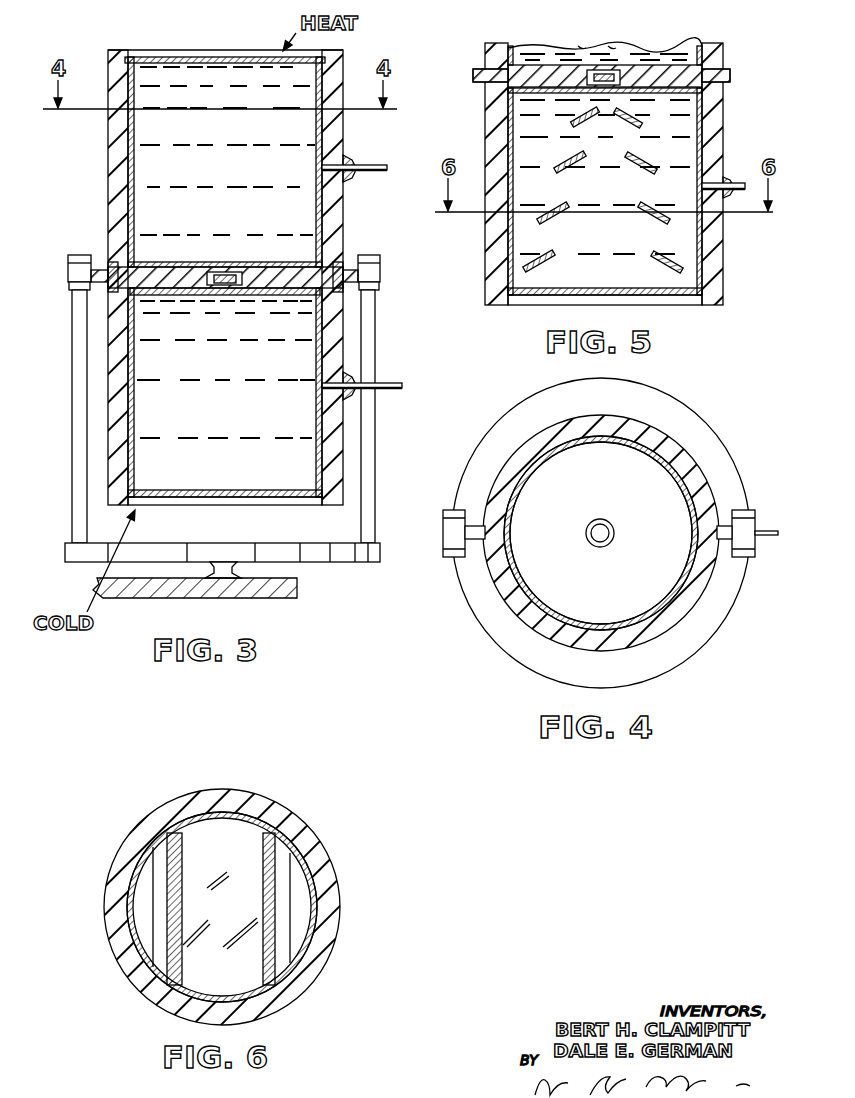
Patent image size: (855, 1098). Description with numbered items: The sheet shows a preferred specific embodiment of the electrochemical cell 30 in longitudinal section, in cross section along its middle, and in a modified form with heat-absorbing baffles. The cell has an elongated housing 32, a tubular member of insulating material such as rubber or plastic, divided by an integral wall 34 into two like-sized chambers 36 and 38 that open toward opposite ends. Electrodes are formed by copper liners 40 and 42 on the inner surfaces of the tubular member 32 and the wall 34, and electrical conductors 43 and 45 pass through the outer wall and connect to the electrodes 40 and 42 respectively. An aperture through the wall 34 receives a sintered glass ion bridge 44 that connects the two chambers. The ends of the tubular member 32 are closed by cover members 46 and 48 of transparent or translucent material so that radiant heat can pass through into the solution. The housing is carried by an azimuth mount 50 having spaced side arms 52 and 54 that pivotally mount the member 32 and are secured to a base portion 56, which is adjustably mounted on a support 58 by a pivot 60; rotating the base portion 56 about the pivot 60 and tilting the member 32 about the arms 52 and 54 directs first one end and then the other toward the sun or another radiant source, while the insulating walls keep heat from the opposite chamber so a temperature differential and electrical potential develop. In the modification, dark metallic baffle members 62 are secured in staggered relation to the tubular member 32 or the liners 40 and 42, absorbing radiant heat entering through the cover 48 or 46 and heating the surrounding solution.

In FIG. 3, the electrochemical cell 30 is at (80, 213).
In FIG. 4, the electrochemical cell 30 is at (498, 664).
In FIG. 3, the elongated housing 32 is at (106, 171).
In FIG. 5, the elongated housing 32 is at (488, 116).
In FIG. 4, the elongated housing 32 is at (520, 613).
In FIG. 6, the elongated housing 32 is at (167, 813).
In FIG. 3, the integral wall 34 is at (287, 243).
In FIG. 5, the integral wall 34 is at (601, 76).
In FIG. 3, the chamber 36 is at (303, 221).
In FIG. 4, the chamber 36 is at (598, 593).
In FIG. 3, the chamber 38 is at (170, 470).
In FIG. 3, the copper liner 40 is at (134, 228).
In FIG. 5, the copper liner 40 is at (699, 30).
In FIG. 4, the copper liner 40 is at (685, 493).
In FIG. 3, the copper liner 42 is at (134, 420).
In FIG. 5, the copper liner 42 is at (510, 197).
In FIG. 6, the copper liner 42 is at (268, 814).
In FIG. 3, the electrical conductor 43 is at (357, 166).
In FIG. 4, the electrical conductor 43 is at (770, 535).
In FIG. 3, the ion bridge 44 is at (226, 272).
In FIG. 4, the ion bridge 44 is at (614, 531).
In FIG. 3, the electrical conductor 45 is at (382, 383).
In FIG. 5, the electrical conductor 45 is at (744, 184).
In FIG. 3, the cover member 46 is at (248, 57).
In FIG. 3, the cover member 48 is at (219, 490).
In FIG. 5, the cover member 48 is at (645, 288).
In FIG. 3, the azimuth mount 50 is at (90, 555).
In FIG. 4, the azimuth mount 50 is at (679, 653).
In FIG. 3, the side arm 52 is at (368, 446).
In FIG. 4, the side arm 52 is at (750, 520).
In FIG. 3, the side arm 54 is at (71, 413).
In FIG. 4, the side arm 54 is at (440, 523).
In FIG. 3, the base portion 56 is at (325, 556).
In FIG. 3, the support 58 is at (292, 598).
In FIG. 3, the pivot 60 is at (230, 563).
In FIG. 5, the baffle members 62 is at (626, 47).
In FIG. 6, the baffle members 62 is at (150, 868).